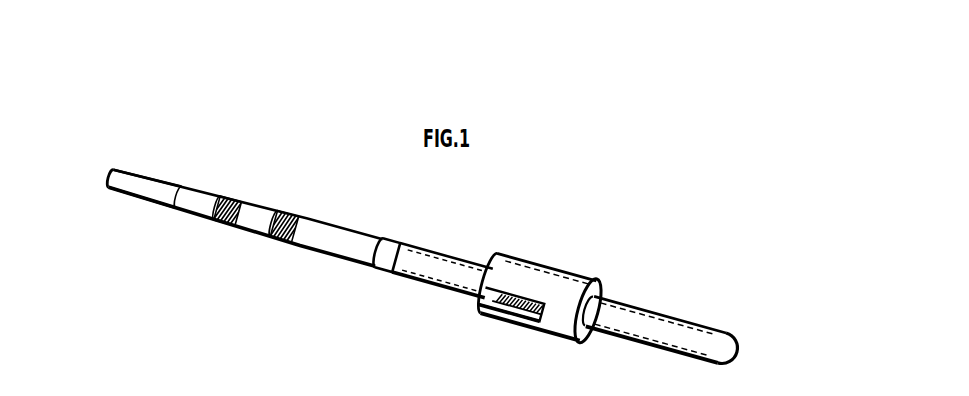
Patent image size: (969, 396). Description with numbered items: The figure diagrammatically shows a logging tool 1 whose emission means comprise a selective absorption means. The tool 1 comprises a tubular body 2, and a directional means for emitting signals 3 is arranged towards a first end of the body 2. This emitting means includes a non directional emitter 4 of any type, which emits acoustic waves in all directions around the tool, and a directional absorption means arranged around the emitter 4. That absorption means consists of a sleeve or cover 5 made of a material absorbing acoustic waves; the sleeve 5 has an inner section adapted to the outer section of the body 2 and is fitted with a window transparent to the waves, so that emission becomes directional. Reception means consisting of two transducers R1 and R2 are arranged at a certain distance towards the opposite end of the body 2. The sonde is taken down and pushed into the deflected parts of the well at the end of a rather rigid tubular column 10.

The logging tool 1 is at (314, 150).
The tubular column 10 is at (138, 173).
The transducer R2 is at (231, 201).
The transducer R1 is at (290, 218).
The tubular body 2 is at (421, 249).
The directional means for emitting signals 3 is at (565, 230).
The non directional emitter 4 is at (481, 304).
The sleeve 5 is at (577, 281).